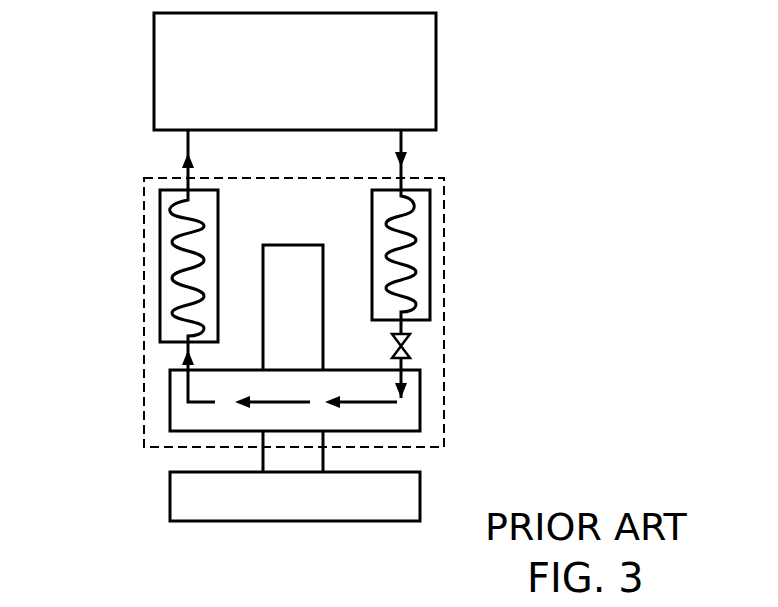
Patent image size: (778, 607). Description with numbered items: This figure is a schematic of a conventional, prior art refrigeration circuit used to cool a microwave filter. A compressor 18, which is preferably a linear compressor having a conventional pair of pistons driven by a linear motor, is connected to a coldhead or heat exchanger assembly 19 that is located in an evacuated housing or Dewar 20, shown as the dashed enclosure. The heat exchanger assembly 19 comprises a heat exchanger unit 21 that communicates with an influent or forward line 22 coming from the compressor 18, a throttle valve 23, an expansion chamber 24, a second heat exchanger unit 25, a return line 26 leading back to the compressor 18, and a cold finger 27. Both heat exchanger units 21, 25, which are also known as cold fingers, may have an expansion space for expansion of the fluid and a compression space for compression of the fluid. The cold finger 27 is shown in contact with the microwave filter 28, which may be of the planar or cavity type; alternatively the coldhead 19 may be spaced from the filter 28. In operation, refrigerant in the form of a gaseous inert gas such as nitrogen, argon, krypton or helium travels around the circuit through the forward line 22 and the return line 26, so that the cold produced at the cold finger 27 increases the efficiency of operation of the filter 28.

The compressor 18 is at (289, 91).
The heat exchanger assembly 19 is at (422, 332).
The Dewar 20 is at (444, 199).
The heat exchanger unit 21 is at (418, 275).
The forward line 22 is at (403, 147).
The throttle valve 23 is at (408, 350).
The expansion chamber 24 is at (403, 421).
The heat exchanger unit 25 is at (168, 208).
The return line 26 is at (186, 147).
The cold finger 27 is at (277, 299).
The microwave filter 28 is at (295, 498).